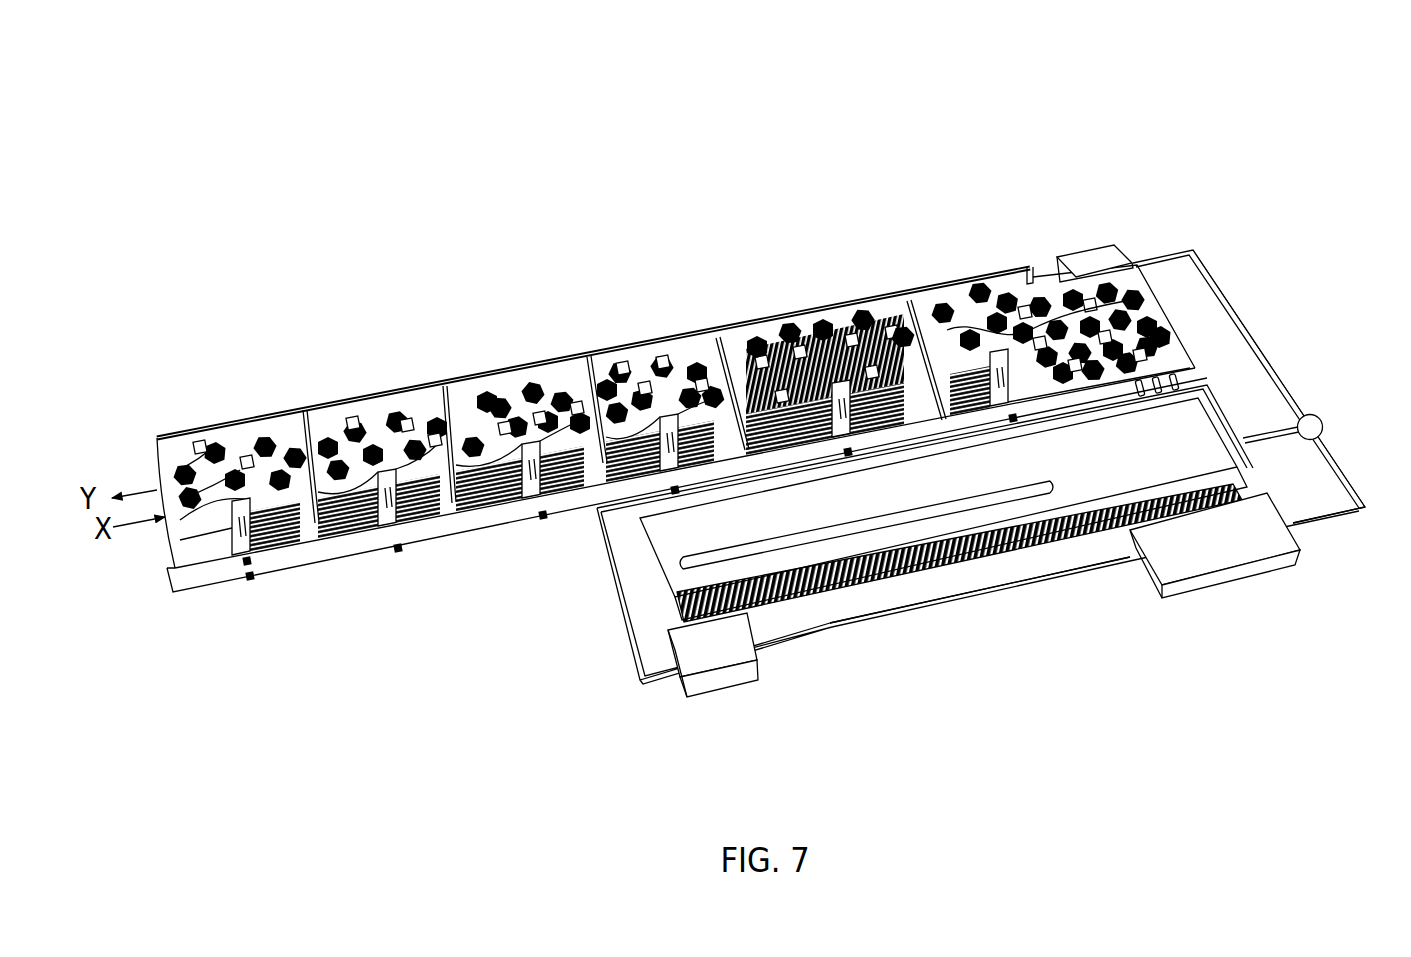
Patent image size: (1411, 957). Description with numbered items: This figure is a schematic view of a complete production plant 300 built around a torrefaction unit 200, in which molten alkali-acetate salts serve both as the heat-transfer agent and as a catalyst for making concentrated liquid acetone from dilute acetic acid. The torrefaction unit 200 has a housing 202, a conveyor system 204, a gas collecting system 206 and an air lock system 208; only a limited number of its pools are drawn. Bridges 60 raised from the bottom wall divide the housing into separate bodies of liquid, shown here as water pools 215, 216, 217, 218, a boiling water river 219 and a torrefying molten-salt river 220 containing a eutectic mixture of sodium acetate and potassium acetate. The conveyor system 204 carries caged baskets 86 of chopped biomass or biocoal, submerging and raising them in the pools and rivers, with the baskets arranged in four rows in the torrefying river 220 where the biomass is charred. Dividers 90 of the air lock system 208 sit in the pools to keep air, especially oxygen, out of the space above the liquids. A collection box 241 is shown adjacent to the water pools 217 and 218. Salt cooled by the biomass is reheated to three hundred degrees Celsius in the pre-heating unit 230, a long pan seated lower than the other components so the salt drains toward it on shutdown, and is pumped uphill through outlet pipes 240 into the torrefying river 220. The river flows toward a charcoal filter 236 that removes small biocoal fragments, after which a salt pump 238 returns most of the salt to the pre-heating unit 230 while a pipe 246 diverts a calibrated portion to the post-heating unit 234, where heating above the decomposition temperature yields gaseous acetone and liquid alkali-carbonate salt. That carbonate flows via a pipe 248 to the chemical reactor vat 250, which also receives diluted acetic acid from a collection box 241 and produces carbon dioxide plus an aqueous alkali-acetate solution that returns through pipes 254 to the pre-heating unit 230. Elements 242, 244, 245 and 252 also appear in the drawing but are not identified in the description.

The bridges 60 is at (966, 312).
The caged baskets 86 is at (212, 443).
The dividers 90 is at (330, 545).
The torrefaction unit 200 is at (201, 240).
The housing 202 is at (171, 592).
The conveyor system 204 is at (243, 466).
The gas collecting system 206 is at (440, 497).
The air lock system 208 is at (947, 323).
The water pool 215 is at (324, 396).
The water pool 216 is at (461, 368).
The water pool 217 is at (601, 338).
The water pool 218 is at (742, 310).
The boiling water river 219 is at (887, 285).
The torrefying molten-salt river 220 is at (1021, 258).
The pre-heating unit 230 is at (780, 514).
The post-heating unit 234 is at (1225, 578).
The charcoal filter 236 is at (1105, 247).
The salt pump 238 is at (1316, 414).
The outlet pipes 240 is at (1180, 387).
The collection boxes 241 is at (670, 495).
The support plate 242 is at (1220, 281).
The rod 244 is at (1273, 441).
The fasteners 245 is at (253, 581).
The pipe 246 is at (1331, 522).
The pipe 248 is at (798, 640).
The chemical reactor vat 250 is at (717, 693).
The frame side 252 is at (627, 627).
The pipes 254 is at (673, 617).
The production plant 300 is at (1231, 138).